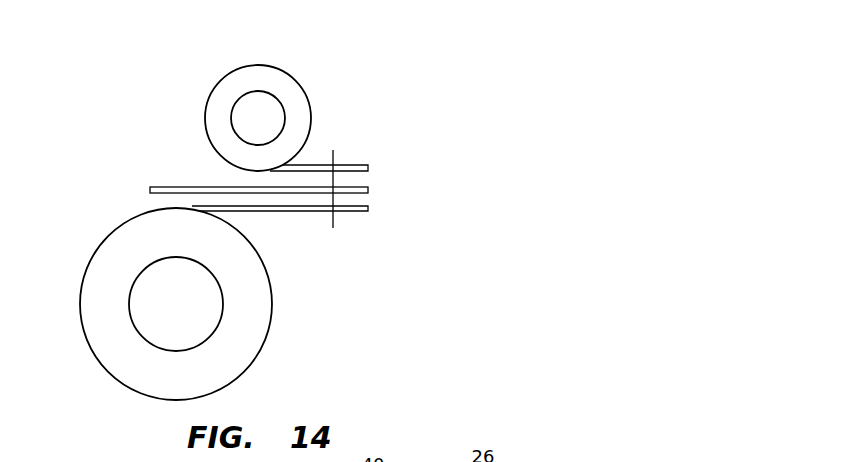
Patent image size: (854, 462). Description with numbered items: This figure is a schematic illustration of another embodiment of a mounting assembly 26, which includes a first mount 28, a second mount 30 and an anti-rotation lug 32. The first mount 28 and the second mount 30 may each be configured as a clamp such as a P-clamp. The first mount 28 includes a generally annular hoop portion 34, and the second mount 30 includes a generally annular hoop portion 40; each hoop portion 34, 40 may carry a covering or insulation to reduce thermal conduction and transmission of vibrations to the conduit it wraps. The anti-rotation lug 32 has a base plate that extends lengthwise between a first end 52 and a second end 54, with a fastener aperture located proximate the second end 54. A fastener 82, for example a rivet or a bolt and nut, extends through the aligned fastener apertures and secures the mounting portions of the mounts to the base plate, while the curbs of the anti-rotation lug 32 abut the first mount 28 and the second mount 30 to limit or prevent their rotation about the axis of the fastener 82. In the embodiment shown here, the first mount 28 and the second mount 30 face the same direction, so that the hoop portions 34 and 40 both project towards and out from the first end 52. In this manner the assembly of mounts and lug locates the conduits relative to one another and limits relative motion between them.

The mounting assembly 26 is at (427, 122).
The first mount 28 is at (285, 320).
The second mount 30 is at (313, 82).
The anti-rotation lug 32 is at (178, 181).
The hoop portion 34 is at (117, 360).
The hoop portion 40 is at (257, 75).
The first end 52 is at (150, 190).
The second end 54 is at (368, 190).
The fastener 82 is at (335, 220).